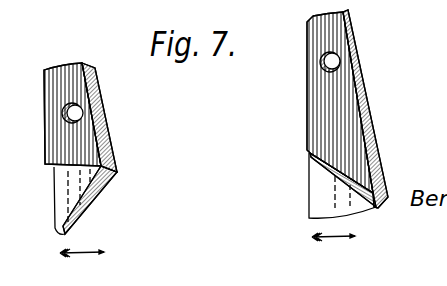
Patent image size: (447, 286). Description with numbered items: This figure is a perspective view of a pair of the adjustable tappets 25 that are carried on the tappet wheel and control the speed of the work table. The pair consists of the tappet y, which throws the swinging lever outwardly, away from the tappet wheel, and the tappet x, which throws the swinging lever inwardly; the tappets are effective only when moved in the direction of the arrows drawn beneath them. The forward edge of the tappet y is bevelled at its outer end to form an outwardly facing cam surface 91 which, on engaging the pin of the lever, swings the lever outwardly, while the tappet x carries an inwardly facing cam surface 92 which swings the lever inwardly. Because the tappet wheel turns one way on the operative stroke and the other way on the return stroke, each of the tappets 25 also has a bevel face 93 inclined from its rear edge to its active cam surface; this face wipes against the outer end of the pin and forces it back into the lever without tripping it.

The tappet 25 is at (107, 118).
The outwardly facing cam surface 91 is at (103, 207).
The inwardly facing cam surface 92 is at (375, 174).
The bevel face 93 is at (62, 193).
The tappet x is at (363, 77).
The tappet y is at (100, 81).